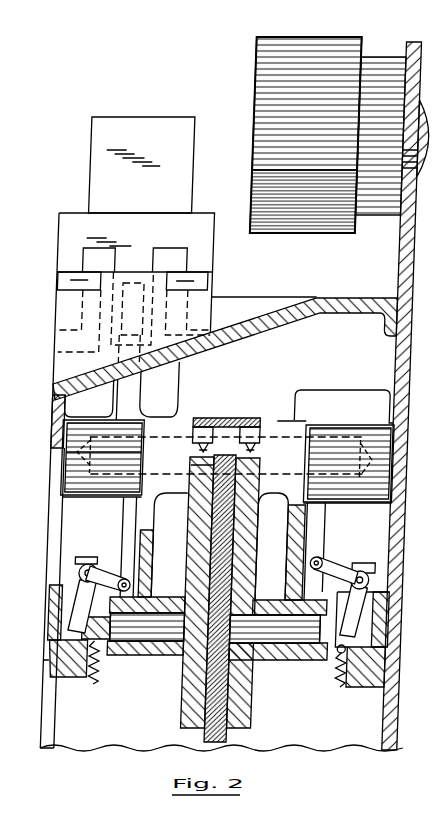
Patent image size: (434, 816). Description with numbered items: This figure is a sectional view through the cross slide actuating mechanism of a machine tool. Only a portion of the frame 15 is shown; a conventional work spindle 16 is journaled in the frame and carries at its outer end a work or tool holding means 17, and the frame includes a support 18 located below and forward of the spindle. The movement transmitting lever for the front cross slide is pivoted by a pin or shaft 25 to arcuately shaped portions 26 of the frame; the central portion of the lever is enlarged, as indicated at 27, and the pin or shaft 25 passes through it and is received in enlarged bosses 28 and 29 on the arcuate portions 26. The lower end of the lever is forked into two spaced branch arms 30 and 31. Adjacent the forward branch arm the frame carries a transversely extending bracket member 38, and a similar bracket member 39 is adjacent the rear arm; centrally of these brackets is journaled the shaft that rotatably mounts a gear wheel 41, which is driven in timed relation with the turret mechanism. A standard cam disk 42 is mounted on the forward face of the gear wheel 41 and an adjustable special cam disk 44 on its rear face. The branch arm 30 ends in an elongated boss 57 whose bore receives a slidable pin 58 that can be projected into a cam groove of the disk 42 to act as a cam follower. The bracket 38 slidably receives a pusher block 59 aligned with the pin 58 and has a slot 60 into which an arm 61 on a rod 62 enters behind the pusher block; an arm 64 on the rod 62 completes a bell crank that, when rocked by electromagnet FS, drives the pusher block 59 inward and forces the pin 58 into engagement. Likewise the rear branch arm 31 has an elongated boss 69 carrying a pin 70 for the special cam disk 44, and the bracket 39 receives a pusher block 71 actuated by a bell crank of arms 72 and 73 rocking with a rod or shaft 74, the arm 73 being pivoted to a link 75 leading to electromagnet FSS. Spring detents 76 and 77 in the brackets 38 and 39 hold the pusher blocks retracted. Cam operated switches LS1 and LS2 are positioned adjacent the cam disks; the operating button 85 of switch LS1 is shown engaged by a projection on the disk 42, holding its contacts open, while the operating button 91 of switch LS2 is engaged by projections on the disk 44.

The frame 15 is at (413, 277).
The work spindle 16 is at (395, 212).
The work or tool holding means 17 is at (272, 64).
The support 18 is at (260, 300).
The pin or shaft 25 is at (353, 440).
The arcuately shaped portions 26 is at (73, 432).
The enlarged central portion of lever 27 is at (295, 420).
The enlarged boss 28 is at (115, 490).
The enlarged boss 29 is at (393, 497).
The branch arm 30 is at (176, 548).
The branch arm 31 is at (311, 556).
The bracket member 38 is at (86, 675).
The bracket member 39 is at (396, 686).
The gear wheel 41 is at (248, 741).
The cam disk 42 is at (209, 690).
The cam disk 44 is at (279, 697).
The elongated boss 57 is at (188, 650).
The slidable pin 58 is at (148, 650).
The pusher block 59 is at (75, 663).
The slot 60 is at (80, 585).
The arm 61 is at (84, 612).
The rod 62 is at (110, 563).
The arm 64 is at (137, 575).
The elongated boss 69 is at (313, 660).
The pin 70 is at (306, 650).
The pusher block 71 is at (288, 639).
The arm 72 is at (373, 608).
The arm 73 is at (348, 570).
The rod or shaft 74 is at (383, 570).
The link 75 is at (336, 530).
The spring detent 76 is at (97, 673).
The spring detent 77 is at (360, 680).
The operating button 85 is at (208, 448).
The operating button 91 is at (268, 448).
The cam operated switch LS1 is at (195, 418).
The cam operated switch LS2 is at (243, 418).